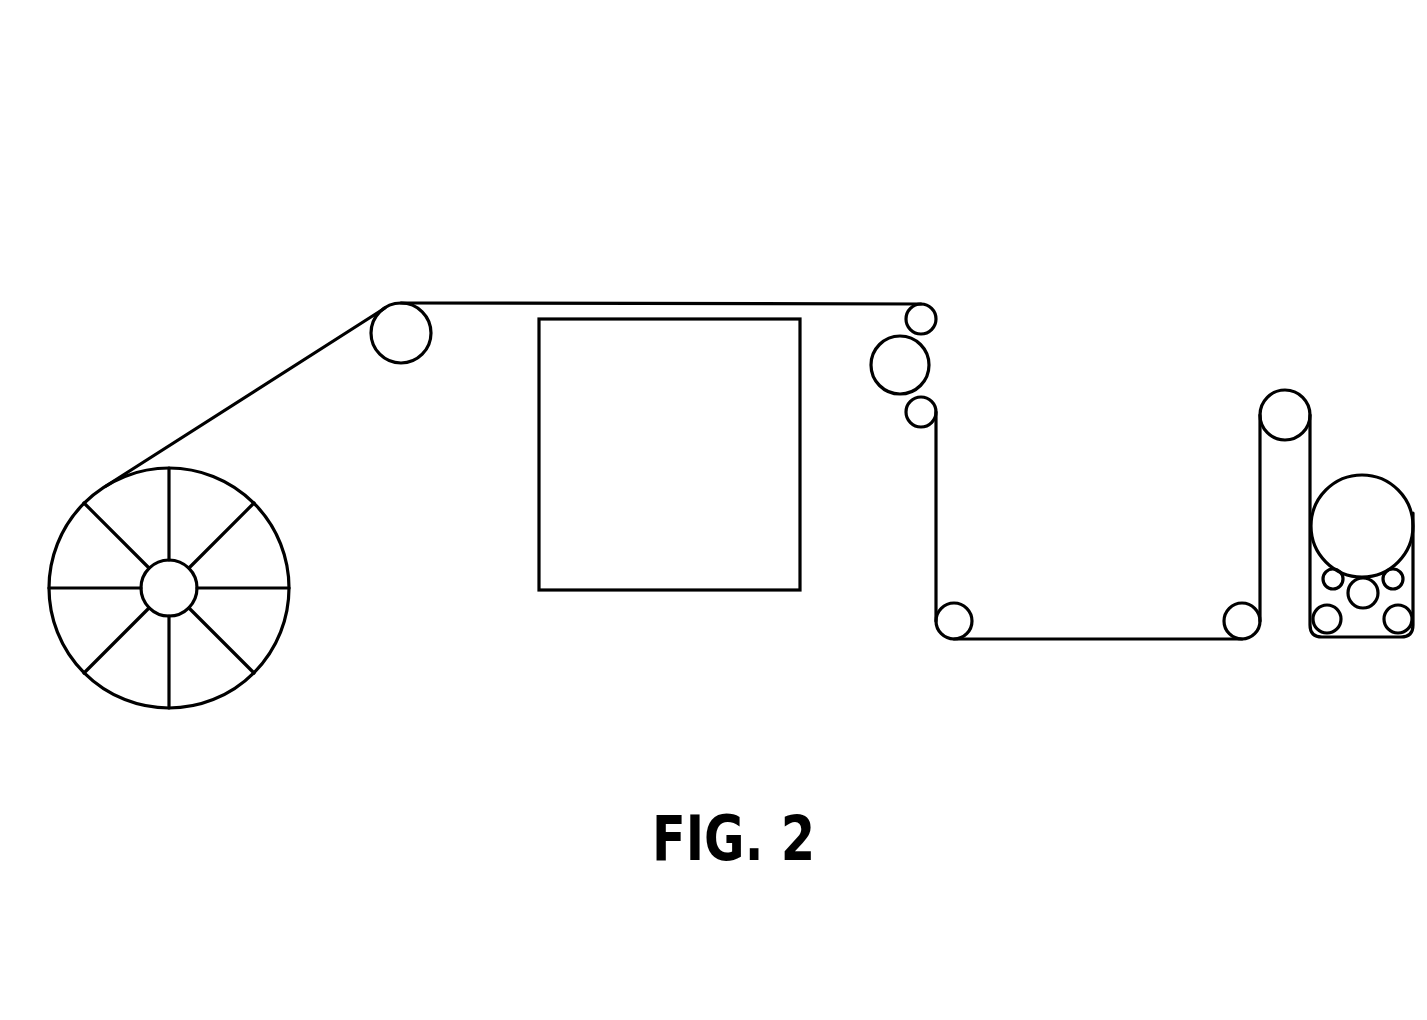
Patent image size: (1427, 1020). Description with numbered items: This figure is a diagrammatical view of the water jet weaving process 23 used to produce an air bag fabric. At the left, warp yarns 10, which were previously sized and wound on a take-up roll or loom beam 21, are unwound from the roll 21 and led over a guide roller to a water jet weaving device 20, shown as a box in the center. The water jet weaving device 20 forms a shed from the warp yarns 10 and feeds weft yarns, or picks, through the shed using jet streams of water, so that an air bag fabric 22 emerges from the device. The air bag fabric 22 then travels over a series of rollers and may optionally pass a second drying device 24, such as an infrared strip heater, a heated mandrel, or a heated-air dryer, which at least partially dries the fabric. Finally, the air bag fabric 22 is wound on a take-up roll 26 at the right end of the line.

The warp yarns 10 is at (285, 373).
The water jet weaving device 20 is at (618, 563).
The take-up roll (loom beam) 21 is at (113, 680).
The air bag fabric 22 is at (937, 517).
The water jet weaving process 23 is at (761, 172).
The second drying device 24 is at (1363, 600).
The take-up roll 26 is at (1360, 485).